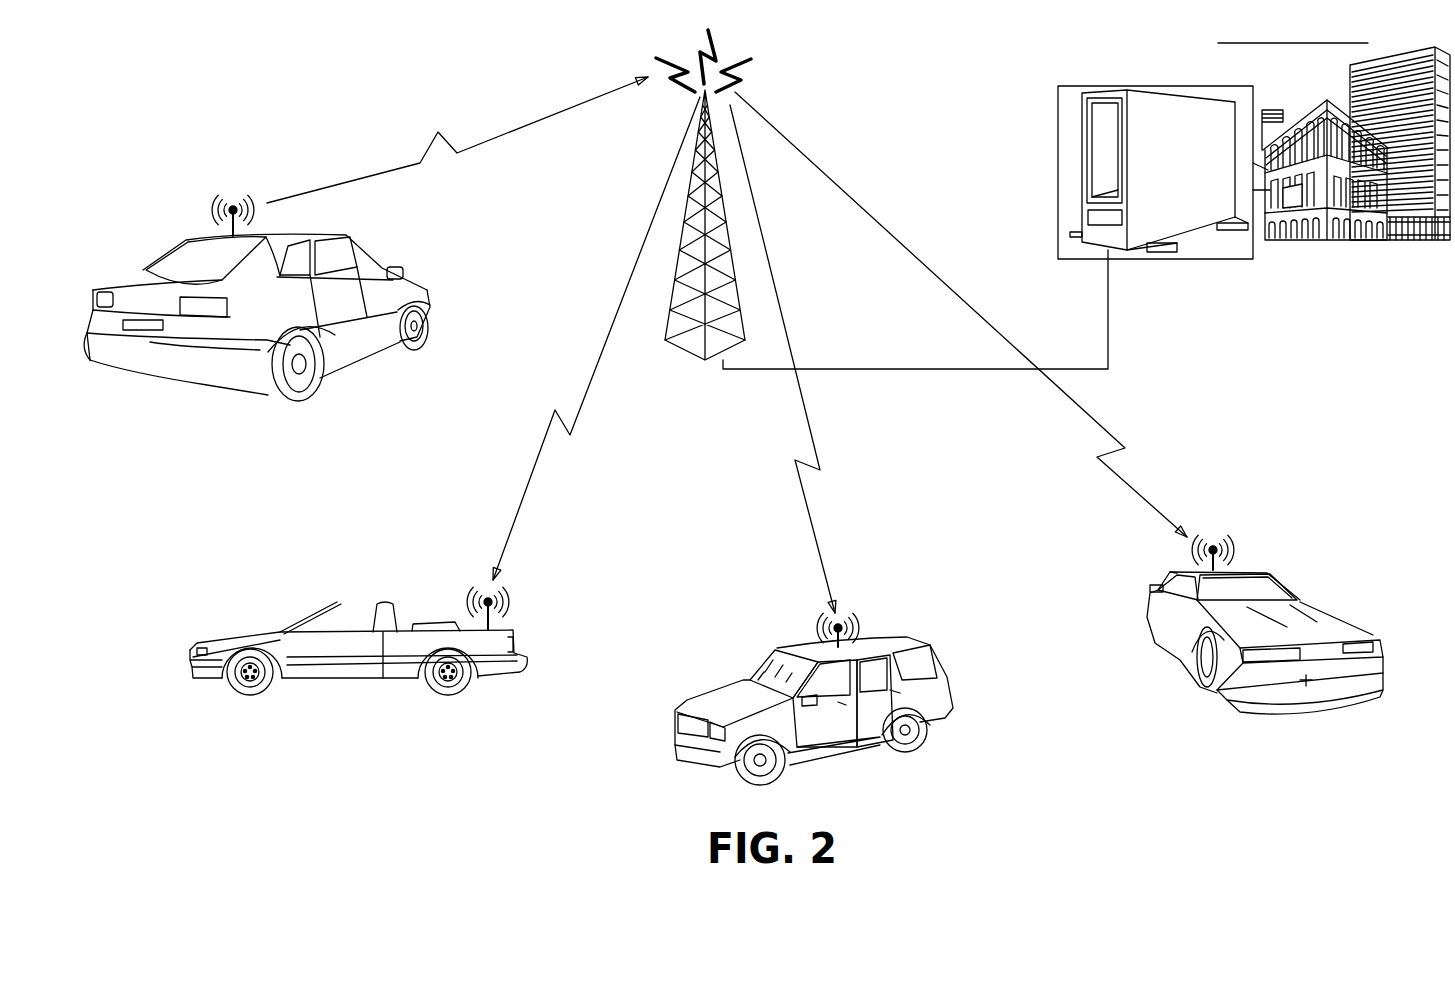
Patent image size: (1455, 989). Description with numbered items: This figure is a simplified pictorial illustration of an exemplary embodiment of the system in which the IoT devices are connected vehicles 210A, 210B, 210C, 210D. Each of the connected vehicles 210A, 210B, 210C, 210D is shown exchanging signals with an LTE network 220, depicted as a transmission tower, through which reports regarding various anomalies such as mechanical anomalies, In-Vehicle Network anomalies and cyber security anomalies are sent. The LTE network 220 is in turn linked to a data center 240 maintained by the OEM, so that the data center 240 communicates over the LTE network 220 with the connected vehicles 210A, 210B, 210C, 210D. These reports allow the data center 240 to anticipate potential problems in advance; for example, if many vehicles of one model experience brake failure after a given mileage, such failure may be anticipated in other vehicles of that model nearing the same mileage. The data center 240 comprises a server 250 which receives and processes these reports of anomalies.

The connected vehicle 210A is at (420, 282).
The connected vehicle 210B is at (527, 657).
The connected vehicle 210C is at (943, 650).
The connected vehicle 210D is at (1300, 590).
The LTE network 220 is at (668, 345).
The data center 240 is at (1425, 272).
The server 250 is at (1100, 130).